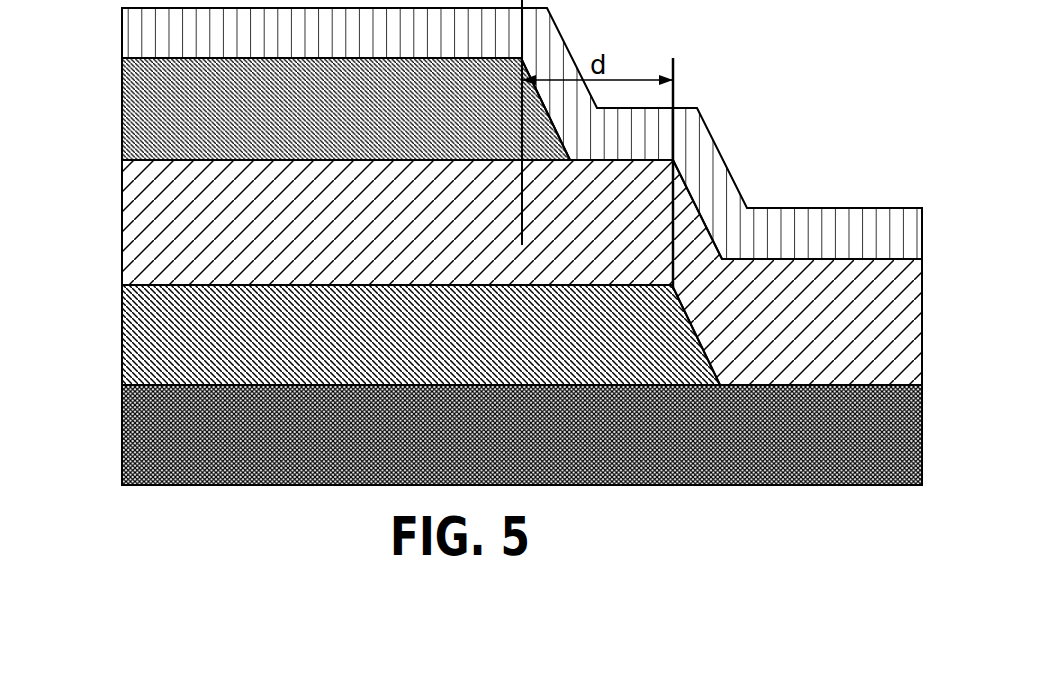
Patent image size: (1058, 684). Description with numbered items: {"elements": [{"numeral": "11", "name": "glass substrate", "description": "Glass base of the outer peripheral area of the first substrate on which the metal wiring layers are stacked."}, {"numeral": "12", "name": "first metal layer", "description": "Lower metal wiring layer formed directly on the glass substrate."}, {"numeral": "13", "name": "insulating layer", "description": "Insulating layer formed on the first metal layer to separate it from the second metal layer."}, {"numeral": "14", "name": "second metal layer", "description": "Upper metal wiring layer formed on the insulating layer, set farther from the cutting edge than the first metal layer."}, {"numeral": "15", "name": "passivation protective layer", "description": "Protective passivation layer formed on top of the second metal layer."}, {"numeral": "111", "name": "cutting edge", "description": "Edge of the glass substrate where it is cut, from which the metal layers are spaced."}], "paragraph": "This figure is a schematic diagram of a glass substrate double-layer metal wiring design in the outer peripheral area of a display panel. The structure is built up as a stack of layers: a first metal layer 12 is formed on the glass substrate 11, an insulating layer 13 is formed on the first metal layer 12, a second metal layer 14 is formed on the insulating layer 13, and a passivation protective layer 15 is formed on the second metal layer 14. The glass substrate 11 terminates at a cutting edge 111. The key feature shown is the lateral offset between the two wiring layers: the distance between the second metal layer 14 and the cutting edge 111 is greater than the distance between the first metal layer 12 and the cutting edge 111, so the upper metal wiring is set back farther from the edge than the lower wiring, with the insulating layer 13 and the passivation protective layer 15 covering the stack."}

The substrate 11 is at (165, 443).
The first layer 12 is at (165, 342).
The second layer 13 is at (175, 232).
The third layer 14 is at (165, 118).
The top layer 15 is at (165, 44).
The side surface of stepped structure 111 is at (913, 238).